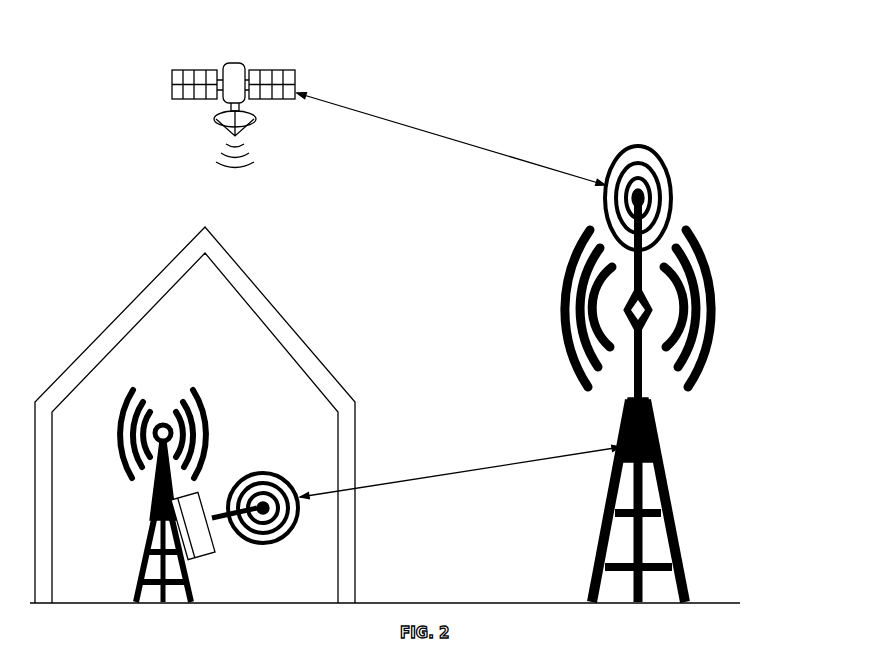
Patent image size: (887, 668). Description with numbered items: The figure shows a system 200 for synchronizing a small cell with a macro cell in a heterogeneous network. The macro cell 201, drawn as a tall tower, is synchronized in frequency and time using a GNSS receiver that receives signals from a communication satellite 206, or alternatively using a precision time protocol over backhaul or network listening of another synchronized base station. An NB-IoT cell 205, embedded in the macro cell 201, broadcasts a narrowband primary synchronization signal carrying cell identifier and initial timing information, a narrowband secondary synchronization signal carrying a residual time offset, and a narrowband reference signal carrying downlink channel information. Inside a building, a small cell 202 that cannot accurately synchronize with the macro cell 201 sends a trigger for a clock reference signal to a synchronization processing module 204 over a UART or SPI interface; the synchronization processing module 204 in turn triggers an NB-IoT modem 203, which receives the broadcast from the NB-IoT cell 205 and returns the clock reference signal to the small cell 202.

The wireless communication system 200 is at (742, 44).
The macro cell 201 is at (663, 503).
The small cell 202 is at (148, 550).
The NB-IoT modem 203 is at (210, 553).
The synchronization processing module 204 is at (192, 561).
The NB-IoT cell 205 is at (673, 203).
The communication satellite 206 is at (262, 70).